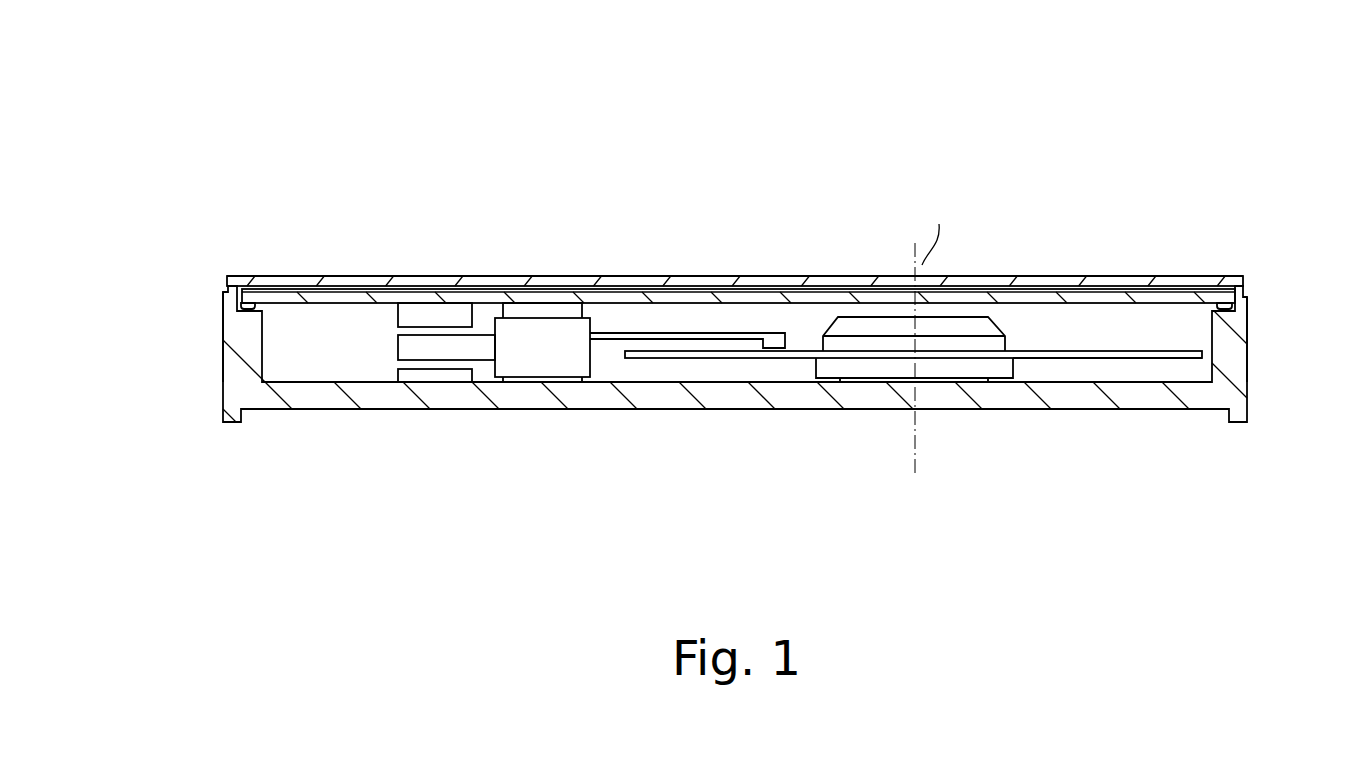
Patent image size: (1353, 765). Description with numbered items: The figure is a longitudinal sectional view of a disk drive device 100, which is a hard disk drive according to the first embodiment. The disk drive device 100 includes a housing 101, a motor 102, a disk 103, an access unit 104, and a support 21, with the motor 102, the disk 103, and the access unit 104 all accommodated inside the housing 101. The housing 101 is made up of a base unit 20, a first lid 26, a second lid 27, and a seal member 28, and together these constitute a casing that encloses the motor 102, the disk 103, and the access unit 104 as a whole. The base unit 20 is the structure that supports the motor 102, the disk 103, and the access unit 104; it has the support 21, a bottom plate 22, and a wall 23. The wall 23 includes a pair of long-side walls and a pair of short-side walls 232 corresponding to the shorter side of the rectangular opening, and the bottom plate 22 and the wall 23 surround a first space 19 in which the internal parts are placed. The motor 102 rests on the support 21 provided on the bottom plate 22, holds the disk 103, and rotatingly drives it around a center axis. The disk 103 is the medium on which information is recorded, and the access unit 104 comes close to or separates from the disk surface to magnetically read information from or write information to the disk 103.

The disk drive device 100 is at (590, 170).
The housing 101 is at (1188, 272).
The motor 102 is at (1012, 324).
The disk 103 is at (1067, 360).
The access unit 104 is at (688, 326).
The first space 19 is at (1194, 340).
The base unit 20 is at (613, 409).
The support 21 is at (944, 384).
The bottom plate 22 is at (745, 398).
The wall 23 is at (223, 345).
The short-side walls 232 is at (230, 319).
The first lid 26 is at (833, 285).
The second lid 27 is at (348, 296).
The seal member 28 is at (1233, 309).